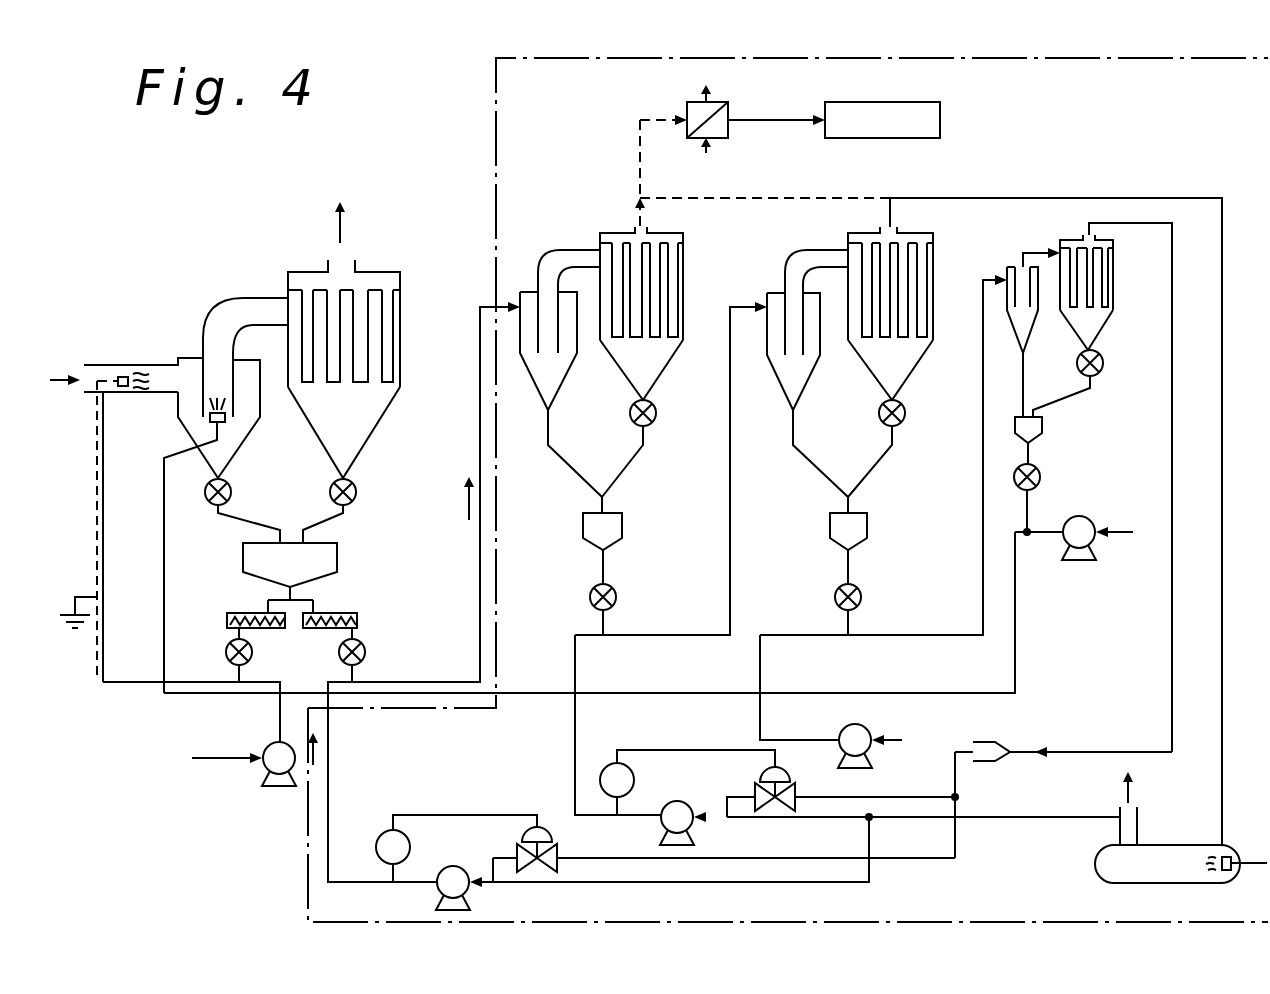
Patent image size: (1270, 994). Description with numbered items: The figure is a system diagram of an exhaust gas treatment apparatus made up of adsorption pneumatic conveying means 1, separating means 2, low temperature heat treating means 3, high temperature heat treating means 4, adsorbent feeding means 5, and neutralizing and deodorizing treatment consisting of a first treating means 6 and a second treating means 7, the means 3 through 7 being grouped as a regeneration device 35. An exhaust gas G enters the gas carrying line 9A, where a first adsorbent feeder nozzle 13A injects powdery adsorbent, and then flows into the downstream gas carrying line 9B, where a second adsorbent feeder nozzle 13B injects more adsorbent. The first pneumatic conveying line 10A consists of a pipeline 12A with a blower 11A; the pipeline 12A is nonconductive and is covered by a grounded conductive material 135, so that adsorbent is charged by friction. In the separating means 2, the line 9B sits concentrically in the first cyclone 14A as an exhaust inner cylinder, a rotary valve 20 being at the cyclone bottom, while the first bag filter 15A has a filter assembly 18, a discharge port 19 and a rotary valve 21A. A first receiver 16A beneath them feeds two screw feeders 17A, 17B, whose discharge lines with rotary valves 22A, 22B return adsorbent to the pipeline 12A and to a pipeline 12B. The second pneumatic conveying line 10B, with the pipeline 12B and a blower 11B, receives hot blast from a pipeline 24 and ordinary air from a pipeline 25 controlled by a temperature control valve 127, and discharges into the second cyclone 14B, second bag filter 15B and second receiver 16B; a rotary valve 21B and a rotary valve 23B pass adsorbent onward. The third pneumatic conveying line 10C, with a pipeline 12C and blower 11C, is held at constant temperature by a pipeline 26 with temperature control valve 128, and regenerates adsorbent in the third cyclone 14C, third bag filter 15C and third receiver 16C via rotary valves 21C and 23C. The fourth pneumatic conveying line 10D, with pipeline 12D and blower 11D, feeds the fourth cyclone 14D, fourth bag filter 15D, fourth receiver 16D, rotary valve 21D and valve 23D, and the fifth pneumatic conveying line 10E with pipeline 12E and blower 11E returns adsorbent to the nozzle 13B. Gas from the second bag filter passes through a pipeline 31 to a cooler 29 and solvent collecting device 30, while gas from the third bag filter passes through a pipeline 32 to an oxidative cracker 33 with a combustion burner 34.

The adsorption pneumatic conveying means 1 is at (163, 352).
The separating means 2 is at (264, 289).
The low temperature heat treating means 3 is at (578, 231).
The high temperature heat treating means 4 is at (793, 244).
The adsorbent feeding means 5 is at (1035, 553).
The first treating means 6 is at (763, 114).
The second treating means 7 is at (1235, 817).
The gas carrying line 9A is at (106, 363).
The gas carrying line 9B is at (203, 388).
The first pneumatic conveying line 10A is at (148, 700).
The second pneumatic conveying line 10B is at (322, 848).
The third pneumatic conveying line 10C is at (569, 783).
The fourth pneumatic conveying line 10D is at (928, 640).
The fifth pneumatic conveying line 10E is at (1023, 688).
The blower 11A is at (270, 768).
The blower 11B is at (453, 868).
The blower 11C is at (690, 822).
The blower 11D is at (855, 735).
The blower 11E is at (1080, 550).
The pipeline 12A is at (103, 682).
The pipeline 12B is at (328, 777).
The pipeline 12C is at (575, 725).
The pipeline 12D is at (983, 538).
The pipeline 12E is at (162, 597).
The first adsorbent feeder nozzle 13A is at (123, 387).
The second adsorbent feeder nozzle 13B is at (224, 425).
The first cyclone 14A is at (190, 358).
The second cyclone 14B is at (527, 290).
The third cyclone 14C is at (770, 290).
The fourth cyclone 14D is at (1010, 270).
The first bag filter 15A is at (307, 272).
The second bag filter 15B is at (620, 233).
The third bag filter 15C is at (860, 233).
The fourth bag filter 15D is at (1070, 240).
The first receiver 16A is at (330, 560).
The second receiver 16B is at (614, 530).
The third receiver 16C is at (862, 530).
The fourth receiver 16D is at (1042, 427).
The screw feeder 17A is at (243, 612).
The screw feeder 17B is at (348, 612).
The filter assembly 18 is at (333, 383).
The discharge port 19 is at (343, 262).
The rotary valve 20 is at (204, 500).
The rotary valve 21A is at (360, 491).
The rotary valve 21B is at (655, 414).
The rotary valve 21C is at (905, 410).
The rotary valve 21D is at (1107, 368).
The rotary valve 22A is at (225, 655).
The rotary valve 22B is at (365, 653).
The rotary valve 23B is at (617, 597).
The rotary valve 23C is at (862, 597).
The discharge valve 23D is at (1042, 477).
The pipeline 24 is at (1052, 820).
The pipeline 25 is at (957, 840).
The pipeline 26 is at (868, 795).
The cooler 29 is at (698, 102).
The solvent collecting device 30 is at (937, 120).
The pipeline 31 is at (637, 137).
The pipeline 32 is at (803, 197).
The oxidative cracker 33 is at (1162, 857).
The combustion burner 34 is at (1225, 853).
The regeneration device 35 is at (494, 127).
The temperature control valve 127 is at (555, 855).
The temperature control valve 128 is at (753, 788).
The conductive material 135 is at (93, 513).
The exhaust gas G is at (65, 358).